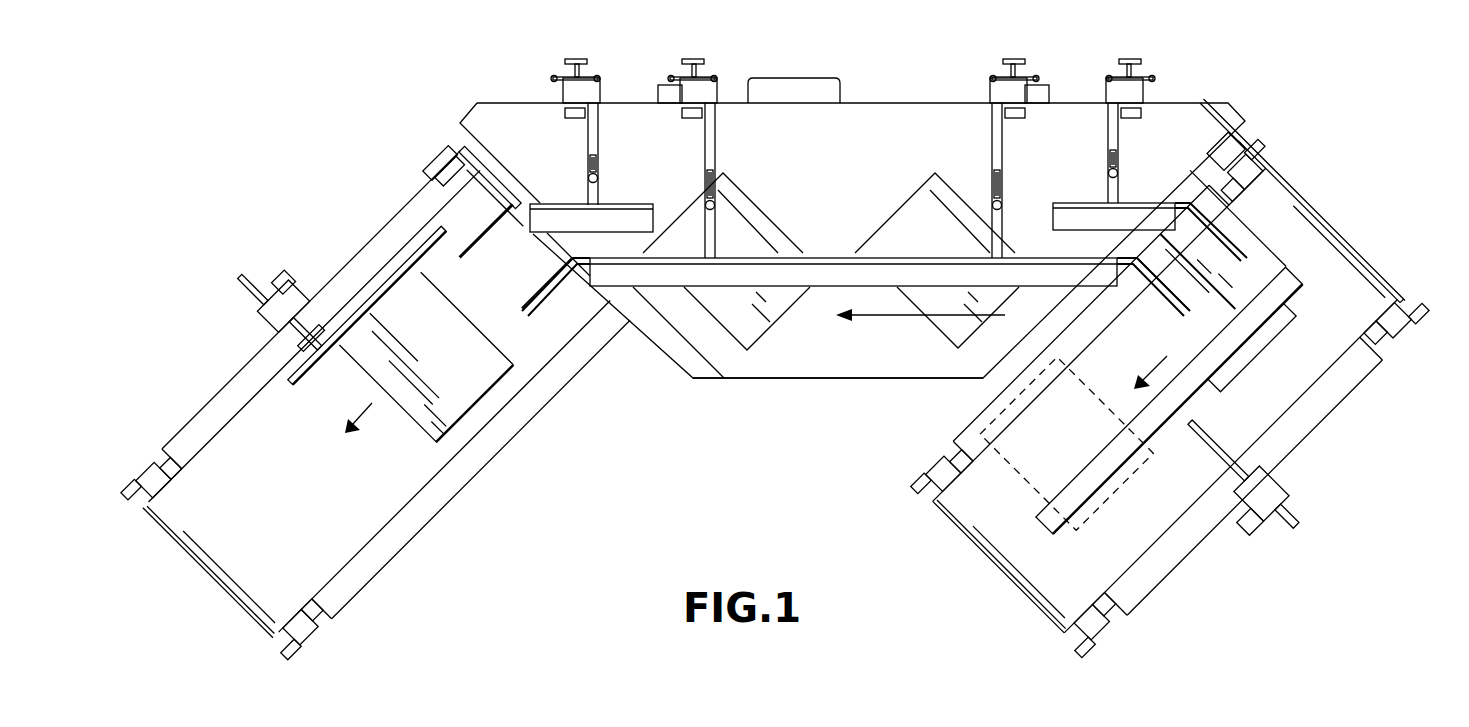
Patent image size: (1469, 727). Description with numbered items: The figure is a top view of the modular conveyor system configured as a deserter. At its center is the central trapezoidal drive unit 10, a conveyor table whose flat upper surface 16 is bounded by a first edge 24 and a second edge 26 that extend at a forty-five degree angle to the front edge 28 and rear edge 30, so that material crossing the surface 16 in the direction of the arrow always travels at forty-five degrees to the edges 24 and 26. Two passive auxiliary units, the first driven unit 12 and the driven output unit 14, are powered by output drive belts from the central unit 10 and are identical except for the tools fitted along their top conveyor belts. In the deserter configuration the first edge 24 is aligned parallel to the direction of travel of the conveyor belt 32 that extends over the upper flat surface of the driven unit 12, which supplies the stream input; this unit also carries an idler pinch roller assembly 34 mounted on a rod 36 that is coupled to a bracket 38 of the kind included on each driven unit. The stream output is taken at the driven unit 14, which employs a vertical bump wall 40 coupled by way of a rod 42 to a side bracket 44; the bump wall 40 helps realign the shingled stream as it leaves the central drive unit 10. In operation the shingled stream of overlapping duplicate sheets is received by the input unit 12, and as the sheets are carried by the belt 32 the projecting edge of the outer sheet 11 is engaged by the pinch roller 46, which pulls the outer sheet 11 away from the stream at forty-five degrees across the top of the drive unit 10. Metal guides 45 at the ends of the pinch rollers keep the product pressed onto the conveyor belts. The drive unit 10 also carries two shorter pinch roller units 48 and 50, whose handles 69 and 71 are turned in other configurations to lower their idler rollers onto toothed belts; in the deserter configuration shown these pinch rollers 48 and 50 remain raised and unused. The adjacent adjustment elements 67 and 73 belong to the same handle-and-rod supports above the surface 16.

The central trapezoidal drive unit 10 is at (871, 86).
The outer sheet 11 is at (1150, 245).
The first driven unit 12 is at (1358, 208).
The driven output unit 14 is at (428, 565).
The flat upper surface 16 is at (1170, 112).
The first edge 24 is at (1230, 147).
The second edge 26 is at (462, 152).
The front edge 28 is at (870, 378).
The rear edge 30 is at (955, 103).
The conveyor belt 32 is at (1366, 262).
The idler pinch roller assembly 34 is at (1290, 312).
The rod 36 is at (1228, 452).
The bracket 38 is at (1290, 490).
The vertical bump wall 40 is at (380, 280).
The rod 42 is at (295, 340).
The side bracket 44 is at (262, 325).
The metal guides 45 is at (480, 247).
The pinch roller 46 is at (835, 270).
The pinch roller unit 48 is at (640, 212).
The pinch roller unit 50 is at (1073, 215).
The clamp post 67 is at (587, 137).
The handle 69 is at (583, 62).
The handle 71 is at (1141, 65).
The clamp post 73 is at (1107, 120).